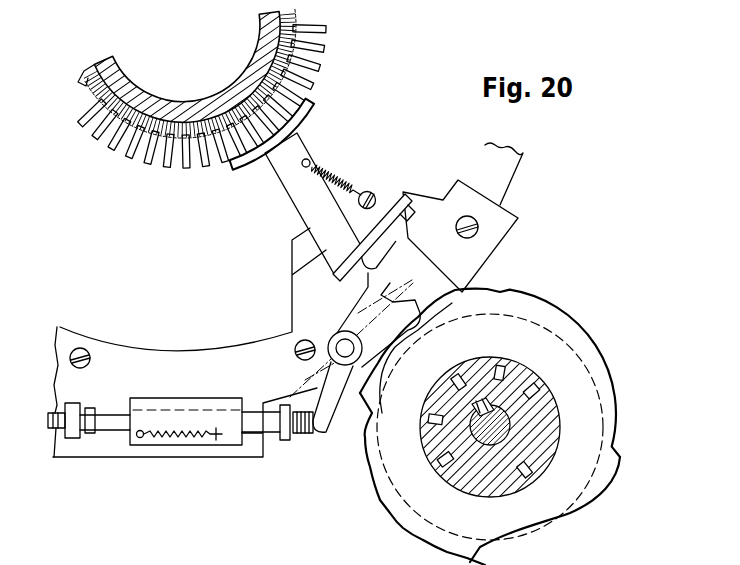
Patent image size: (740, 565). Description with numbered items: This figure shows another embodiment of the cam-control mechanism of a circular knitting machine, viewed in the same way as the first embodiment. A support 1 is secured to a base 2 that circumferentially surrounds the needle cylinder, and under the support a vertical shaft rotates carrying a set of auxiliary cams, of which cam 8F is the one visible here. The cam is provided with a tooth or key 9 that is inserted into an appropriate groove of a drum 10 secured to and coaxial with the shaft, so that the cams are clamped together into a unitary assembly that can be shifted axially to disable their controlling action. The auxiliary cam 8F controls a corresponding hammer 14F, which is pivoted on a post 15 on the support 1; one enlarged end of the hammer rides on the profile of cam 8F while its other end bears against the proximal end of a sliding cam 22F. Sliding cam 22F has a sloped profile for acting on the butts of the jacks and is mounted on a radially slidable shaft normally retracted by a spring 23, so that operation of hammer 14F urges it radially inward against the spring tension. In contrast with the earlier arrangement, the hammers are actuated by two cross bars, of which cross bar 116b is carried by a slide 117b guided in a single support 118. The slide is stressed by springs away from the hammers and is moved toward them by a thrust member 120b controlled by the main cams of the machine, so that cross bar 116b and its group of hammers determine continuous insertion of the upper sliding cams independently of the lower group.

The support 1 is at (183, 347).
The base 2 is at (520, 177).
The auxiliary cam 8F is at (394, 527).
The tooth or key 9 is at (455, 375).
The drum 10 is at (558, 394).
The hammer 14F is at (341, 416).
The post 15 is at (337, 338).
The sliding cam 22F is at (293, 203).
The spring 23 is at (342, 185).
The cross bar 116b is at (296, 434).
The slide 117b is at (273, 441).
The support 118 is at (218, 449).
The thrust member 120b is at (82, 440).